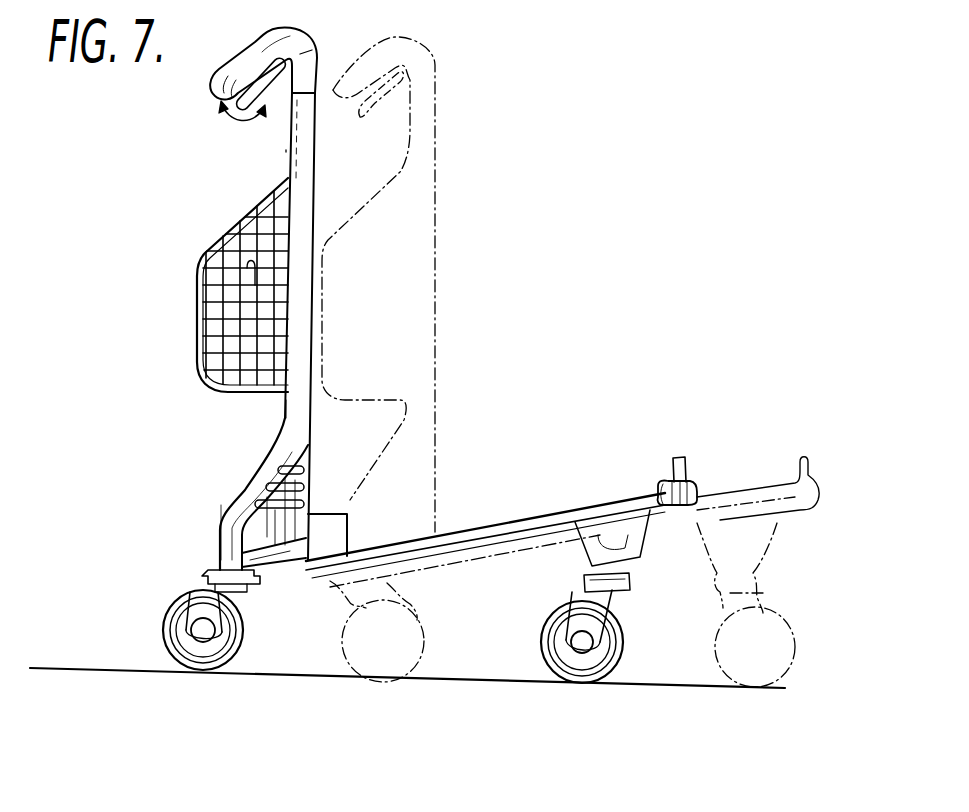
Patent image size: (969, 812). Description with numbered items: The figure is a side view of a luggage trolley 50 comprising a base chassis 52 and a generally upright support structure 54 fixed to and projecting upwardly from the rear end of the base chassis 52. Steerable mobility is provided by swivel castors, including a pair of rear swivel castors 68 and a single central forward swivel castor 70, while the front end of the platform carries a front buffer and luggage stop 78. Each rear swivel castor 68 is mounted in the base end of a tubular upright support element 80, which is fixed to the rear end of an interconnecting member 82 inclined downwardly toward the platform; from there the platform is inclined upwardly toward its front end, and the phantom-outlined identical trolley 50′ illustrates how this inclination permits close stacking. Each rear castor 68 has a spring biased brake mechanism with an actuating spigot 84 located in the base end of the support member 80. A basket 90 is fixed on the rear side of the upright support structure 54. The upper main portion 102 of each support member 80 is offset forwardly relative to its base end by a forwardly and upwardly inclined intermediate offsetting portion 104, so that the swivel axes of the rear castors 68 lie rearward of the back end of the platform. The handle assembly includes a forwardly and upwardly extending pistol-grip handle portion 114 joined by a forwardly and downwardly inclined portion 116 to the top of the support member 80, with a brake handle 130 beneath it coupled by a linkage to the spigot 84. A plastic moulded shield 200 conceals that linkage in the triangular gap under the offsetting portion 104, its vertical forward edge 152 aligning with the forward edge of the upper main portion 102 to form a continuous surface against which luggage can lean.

The trolley 50 is at (520, 275).
The further identical trolley 50′ is at (427, 123).
The base chassis 52 is at (458, 505).
The upright support structure 54 is at (282, 155).
The rear swivel castor 68 is at (172, 640).
The forward swivel castor 70 is at (600, 680).
The front buffer and luggage stop 78 is at (684, 460).
The upright support element 80 is at (284, 412).
The interconnecting member 82 is at (205, 588).
The actuating spigot 84 is at (226, 527).
The basket 90 is at (190, 302).
The upper main portion 102 is at (300, 181).
The intermediate offsetting portion 104 is at (255, 462).
The forwardly and upwardly extending handle portion 114 is at (240, 50).
The forwardly and downwardly inclined portion 116 is at (307, 48).
The brake handle 130 is at (261, 110).
The vertical forward edge 152 is at (347, 514).
The shield 200 is at (310, 470).